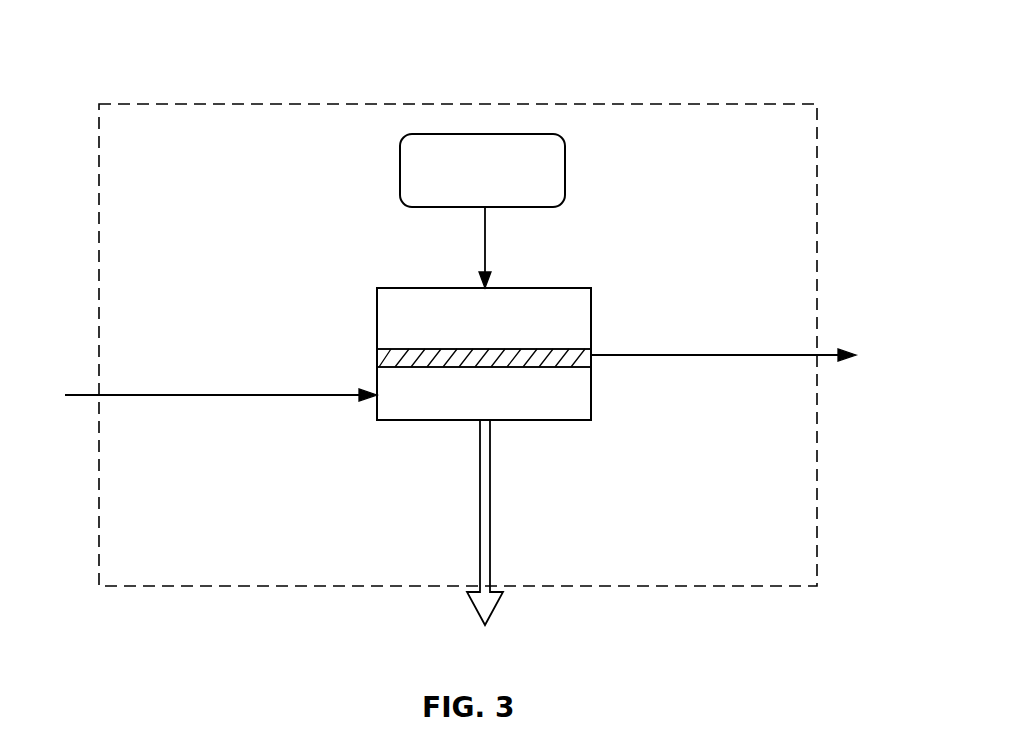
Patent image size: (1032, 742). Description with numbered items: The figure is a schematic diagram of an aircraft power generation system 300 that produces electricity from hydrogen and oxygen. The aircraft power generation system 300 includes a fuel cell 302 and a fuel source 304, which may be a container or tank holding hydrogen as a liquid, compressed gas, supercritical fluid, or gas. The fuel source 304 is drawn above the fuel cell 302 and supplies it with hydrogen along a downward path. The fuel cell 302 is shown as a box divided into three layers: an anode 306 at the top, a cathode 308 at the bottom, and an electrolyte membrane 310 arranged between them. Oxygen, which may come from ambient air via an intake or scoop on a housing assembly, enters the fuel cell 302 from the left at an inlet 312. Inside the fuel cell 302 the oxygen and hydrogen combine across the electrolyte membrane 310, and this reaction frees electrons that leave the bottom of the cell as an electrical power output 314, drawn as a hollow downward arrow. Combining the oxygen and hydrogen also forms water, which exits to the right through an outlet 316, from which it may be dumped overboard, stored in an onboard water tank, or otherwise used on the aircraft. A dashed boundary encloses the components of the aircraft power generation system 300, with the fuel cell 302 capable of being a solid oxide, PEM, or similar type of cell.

The aircraft power generation system 300 is at (788, 55).
The fuel cell 302 is at (573, 422).
The fuel source 304 is at (438, 208).
The anode 306 is at (568, 318).
The cathode 308 is at (423, 410).
The electrolyte membrane 310 is at (378, 356).
The inlet 312 is at (80, 397).
The electrical power output 314 is at (490, 603).
The outlet 316 is at (828, 358).